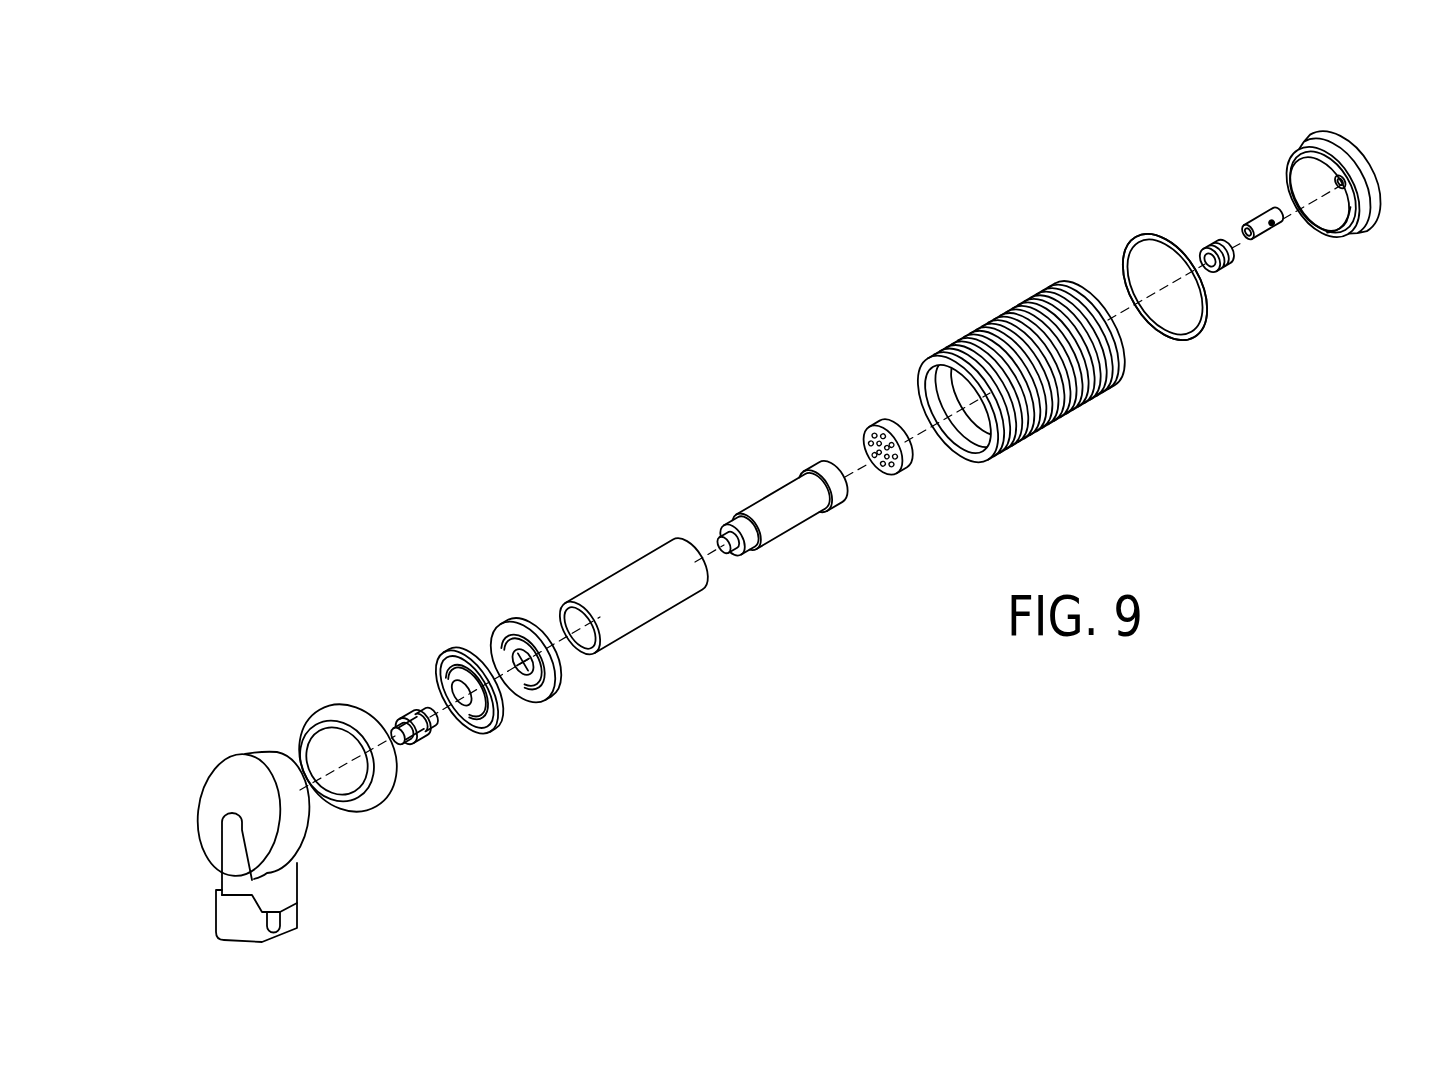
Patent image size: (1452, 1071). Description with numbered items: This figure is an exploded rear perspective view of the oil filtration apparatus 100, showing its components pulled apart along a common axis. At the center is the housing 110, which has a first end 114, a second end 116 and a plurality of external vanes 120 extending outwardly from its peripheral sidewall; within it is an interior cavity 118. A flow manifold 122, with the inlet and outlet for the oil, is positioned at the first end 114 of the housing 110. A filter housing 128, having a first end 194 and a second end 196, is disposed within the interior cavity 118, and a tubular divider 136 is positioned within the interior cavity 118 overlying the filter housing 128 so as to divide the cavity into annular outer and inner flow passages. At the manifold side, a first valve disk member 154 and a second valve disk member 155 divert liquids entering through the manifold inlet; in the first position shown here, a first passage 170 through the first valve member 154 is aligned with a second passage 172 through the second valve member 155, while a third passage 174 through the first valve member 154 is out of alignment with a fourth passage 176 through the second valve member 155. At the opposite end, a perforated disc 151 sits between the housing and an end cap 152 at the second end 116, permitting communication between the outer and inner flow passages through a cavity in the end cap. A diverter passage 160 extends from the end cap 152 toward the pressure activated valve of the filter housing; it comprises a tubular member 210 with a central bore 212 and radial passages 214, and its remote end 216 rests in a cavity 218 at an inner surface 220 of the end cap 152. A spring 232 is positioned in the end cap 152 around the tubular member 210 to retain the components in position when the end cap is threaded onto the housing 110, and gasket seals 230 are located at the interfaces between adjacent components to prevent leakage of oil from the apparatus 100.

The oil filtration apparatus 100 is at (801, 524).
The housing 110 is at (1026, 392).
The first end 114 is at (930, 376).
The second end 116 is at (1118, 380).
The interior cavity 118 is at (963, 440).
The external vanes 120 is at (1015, 327).
The flow manifold 122 is at (250, 760).
The filter housing 128 is at (754, 497).
The tubular divider 136 is at (630, 580).
The perforated disc 151 is at (877, 427).
The end cap 152 is at (1358, 197).
The first valve disk member 154 is at (531, 669).
The second valve disk member 155 is at (456, 711).
The diverter passage 160 is at (1250, 217).
The first passage 170 is at (500, 627).
The second passage 172 is at (443, 665).
The third passage 174 is at (513, 684).
The fourth passage 176 is at (440, 693).
The first end 194 is at (725, 537).
The second end 196 is at (837, 473).
The tubular member 210 is at (1250, 243).
The central bore 212 is at (1233, 233).
The radial passages 214 is at (1278, 237).
The remote end 216 is at (1270, 217).
The cavity 218 is at (1327, 230).
The inner surface 220 is at (1355, 232).
The gasket seals 230 is at (376, 806).
The spring 232 is at (1208, 240).